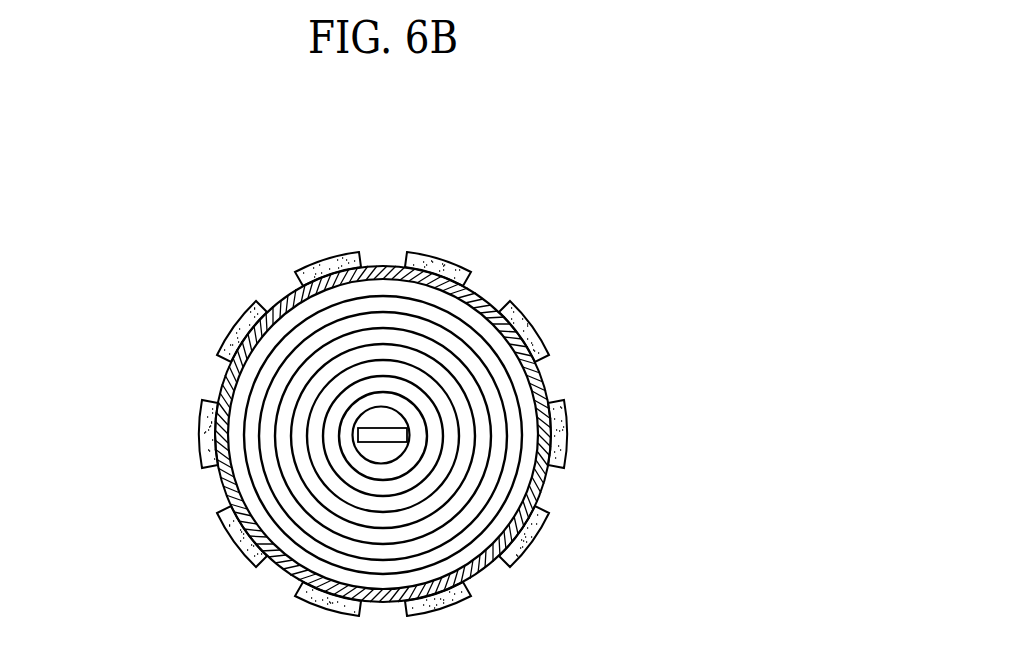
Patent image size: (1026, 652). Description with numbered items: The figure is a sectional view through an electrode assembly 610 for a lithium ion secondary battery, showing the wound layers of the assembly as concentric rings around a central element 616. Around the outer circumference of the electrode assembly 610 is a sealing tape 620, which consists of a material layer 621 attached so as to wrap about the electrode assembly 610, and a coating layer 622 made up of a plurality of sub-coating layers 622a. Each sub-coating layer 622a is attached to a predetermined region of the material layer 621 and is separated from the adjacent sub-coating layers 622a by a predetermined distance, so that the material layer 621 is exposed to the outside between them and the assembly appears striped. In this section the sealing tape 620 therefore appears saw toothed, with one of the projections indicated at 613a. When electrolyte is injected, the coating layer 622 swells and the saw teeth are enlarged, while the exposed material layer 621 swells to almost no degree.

The electrode assembly 610 is at (568, 227).
The center pin 616 is at (383, 431).
The can contact portion 613a is at (207, 429).
The sealing tape 620 is at (826, 340).
The material layer 621 is at (547, 371).
The coating layer 622 is at (743, 437).
The sub-coating layer 622a is at (567, 425).